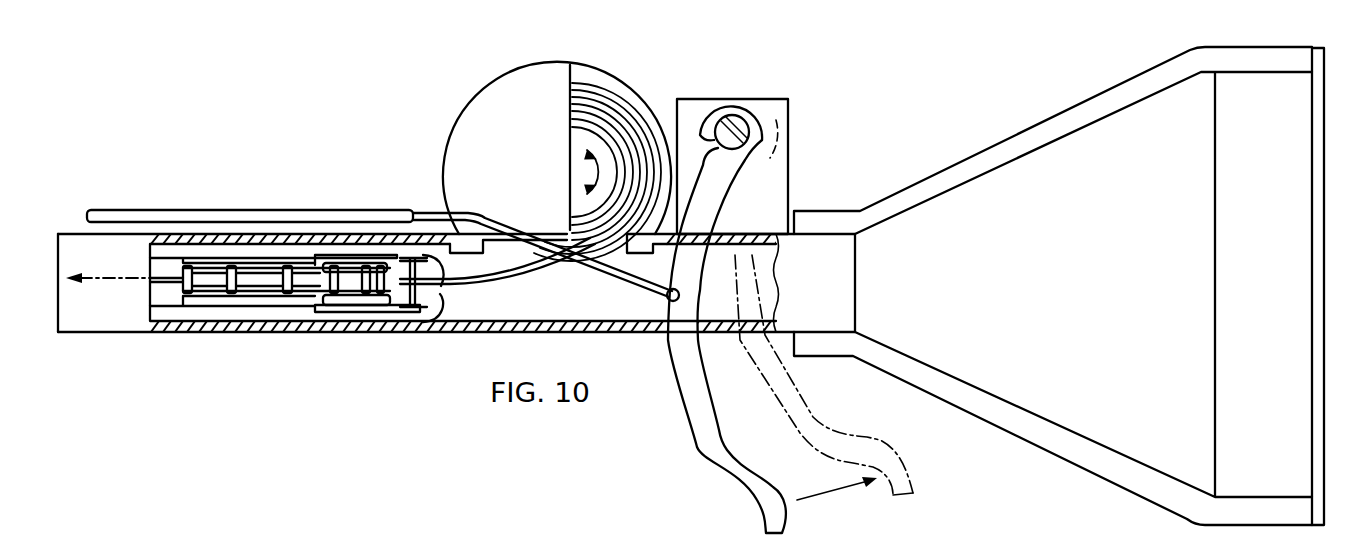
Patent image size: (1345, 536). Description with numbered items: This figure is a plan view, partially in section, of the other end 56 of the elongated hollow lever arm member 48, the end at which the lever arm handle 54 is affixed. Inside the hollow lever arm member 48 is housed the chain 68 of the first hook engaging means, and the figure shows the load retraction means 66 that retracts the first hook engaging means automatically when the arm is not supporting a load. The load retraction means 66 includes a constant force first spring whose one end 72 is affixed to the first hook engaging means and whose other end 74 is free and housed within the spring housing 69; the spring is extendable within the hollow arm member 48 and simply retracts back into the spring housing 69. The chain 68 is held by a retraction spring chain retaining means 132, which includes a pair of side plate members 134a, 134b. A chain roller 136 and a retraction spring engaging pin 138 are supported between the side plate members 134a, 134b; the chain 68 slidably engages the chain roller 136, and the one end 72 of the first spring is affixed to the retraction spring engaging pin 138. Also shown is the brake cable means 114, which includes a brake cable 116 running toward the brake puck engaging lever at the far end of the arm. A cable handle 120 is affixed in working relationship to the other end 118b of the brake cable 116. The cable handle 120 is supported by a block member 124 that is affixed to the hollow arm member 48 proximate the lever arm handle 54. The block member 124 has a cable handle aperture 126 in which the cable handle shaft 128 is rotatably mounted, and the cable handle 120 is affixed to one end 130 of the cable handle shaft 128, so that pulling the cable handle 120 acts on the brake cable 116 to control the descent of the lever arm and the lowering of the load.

The elongated hollow lever arm member 48 is at (133, 333).
The lever arm handle 54 is at (1213, 238).
The other end 56 is at (103, 335).
The load retraction means 66 is at (611, 72).
The chain 68 is at (263, 300).
The spring housing 69 is at (482, 102).
The one end of the first spring 72 is at (420, 311).
The other end of the first spring 74 is at (568, 117).
The brake cable means 114 is at (724, 177).
The brake cable 116 is at (438, 210).
The other end of the brake cable 118b is at (610, 271).
The cable handle 120 is at (684, 393).
The block member 124 is at (788, 137).
The cable handle aperture 126 is at (790, 108).
The cable handle shaft 128 is at (749, 100).
The one end of the cable shaft 130 is at (718, 120).
The retraction spring chain retaining means 132 is at (323, 252).
The side plate member 134a is at (430, 322).
The side plate member 134b is at (437, 278).
The chain roller 136 is at (350, 303).
The retraction spring engaging pin 138 is at (400, 308).